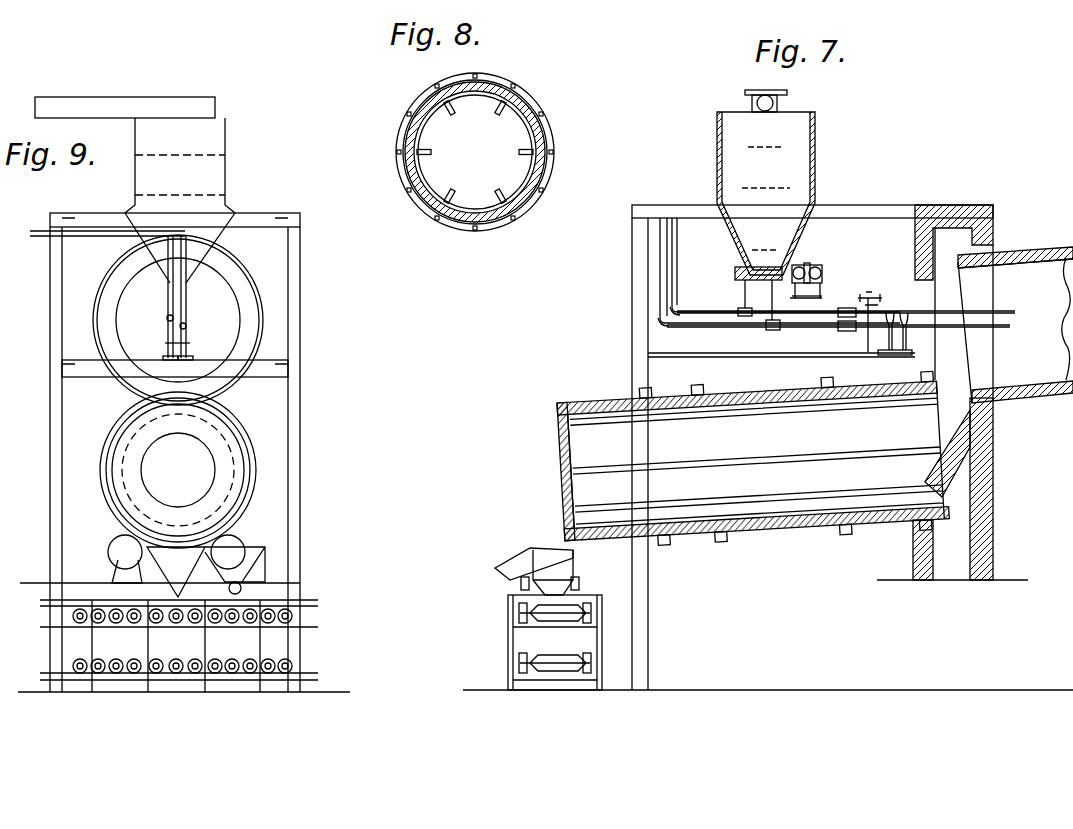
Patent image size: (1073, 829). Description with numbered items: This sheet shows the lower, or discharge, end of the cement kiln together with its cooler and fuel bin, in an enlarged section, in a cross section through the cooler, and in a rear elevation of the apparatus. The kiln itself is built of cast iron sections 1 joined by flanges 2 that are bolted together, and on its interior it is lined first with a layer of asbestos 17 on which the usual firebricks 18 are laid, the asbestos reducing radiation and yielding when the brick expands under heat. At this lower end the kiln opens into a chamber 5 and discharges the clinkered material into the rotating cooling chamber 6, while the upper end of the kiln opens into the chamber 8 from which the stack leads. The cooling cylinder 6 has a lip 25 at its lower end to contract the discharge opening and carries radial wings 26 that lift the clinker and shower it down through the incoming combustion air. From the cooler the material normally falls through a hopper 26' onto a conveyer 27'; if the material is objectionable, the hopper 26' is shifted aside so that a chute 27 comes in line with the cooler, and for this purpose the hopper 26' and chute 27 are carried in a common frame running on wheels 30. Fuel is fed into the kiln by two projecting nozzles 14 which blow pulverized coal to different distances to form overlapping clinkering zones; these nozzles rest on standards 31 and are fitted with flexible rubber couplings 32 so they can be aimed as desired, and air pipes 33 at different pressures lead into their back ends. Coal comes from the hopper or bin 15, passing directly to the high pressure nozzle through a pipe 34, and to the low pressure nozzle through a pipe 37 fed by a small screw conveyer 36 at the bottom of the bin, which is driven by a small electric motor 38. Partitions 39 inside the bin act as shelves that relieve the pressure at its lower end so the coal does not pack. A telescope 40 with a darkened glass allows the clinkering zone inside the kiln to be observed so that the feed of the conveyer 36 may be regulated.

In FIG. 7, the cast iron sections 1 is at (1030, 246).
In FIG. 9, the flanges 2 is at (285, 606).
In FIG. 7, the chamber 5 is at (954, 233).
In FIG. 9, the cooling chamber 6 is at (183, 470).
In FIG. 8, the cooling chamber 6 is at (483, 152).
In FIG. 7, the cooling chamber 6 is at (753, 469).
In FIG. 7, the chamber 8 is at (790, 453).
In FIG. 9, the fuel projecting nozzles 14 is at (187, 326).
In FIG. 7, the fuel projecting nozzles 14 is at (996, 330).
In FIG. 9, the hopper 15 is at (225, 165).
In FIG. 7, the hopper 15 is at (815, 165).
In FIG. 7, the asbestos layer 17 is at (1040, 268).
In FIG. 7, the firebricks 18 is at (1030, 385).
In FIG. 9, the lip 25 is at (135, 480).
In FIG. 8, the lip 25 is at (430, 152).
In FIG. 7, the lip 25 is at (548, 472).
In FIG. 9, the radial wings 26 is at (178, 470).
In FIG. 7, the radial wings 26 is at (756, 468).
In FIG. 9, the hopper 26' is at (176, 572).
In FIG. 7, the hopper 26' is at (571, 572).
In FIG. 9, the chute 27 is at (194, 551).
In FIG. 7, the chute 27 is at (524, 562).
In FIG. 7, the conveyer 27' is at (535, 642).
In FIG. 9, the wheels 30 is at (243, 587).
In FIG. 9, the standards 31 is at (165, 343).
In FIG. 7, the standards 31 is at (912, 347).
In FIG. 7, the couplings 32 is at (843, 330).
In FIG. 9, the air pipes 33 is at (168, 282).
In FIG. 7, the air pipes 33 is at (700, 303).
In FIG. 7, the pipe 34 is at (807, 303).
In FIG. 7, the conveyer 36 is at (748, 272).
In FIG. 7, the pipe 37 is at (744, 297).
In FIG. 7, the electric motor 38 is at (808, 268).
In FIG. 7, the partitions 39 is at (766, 198).
In FIG. 7, the telescope 40 is at (872, 296).